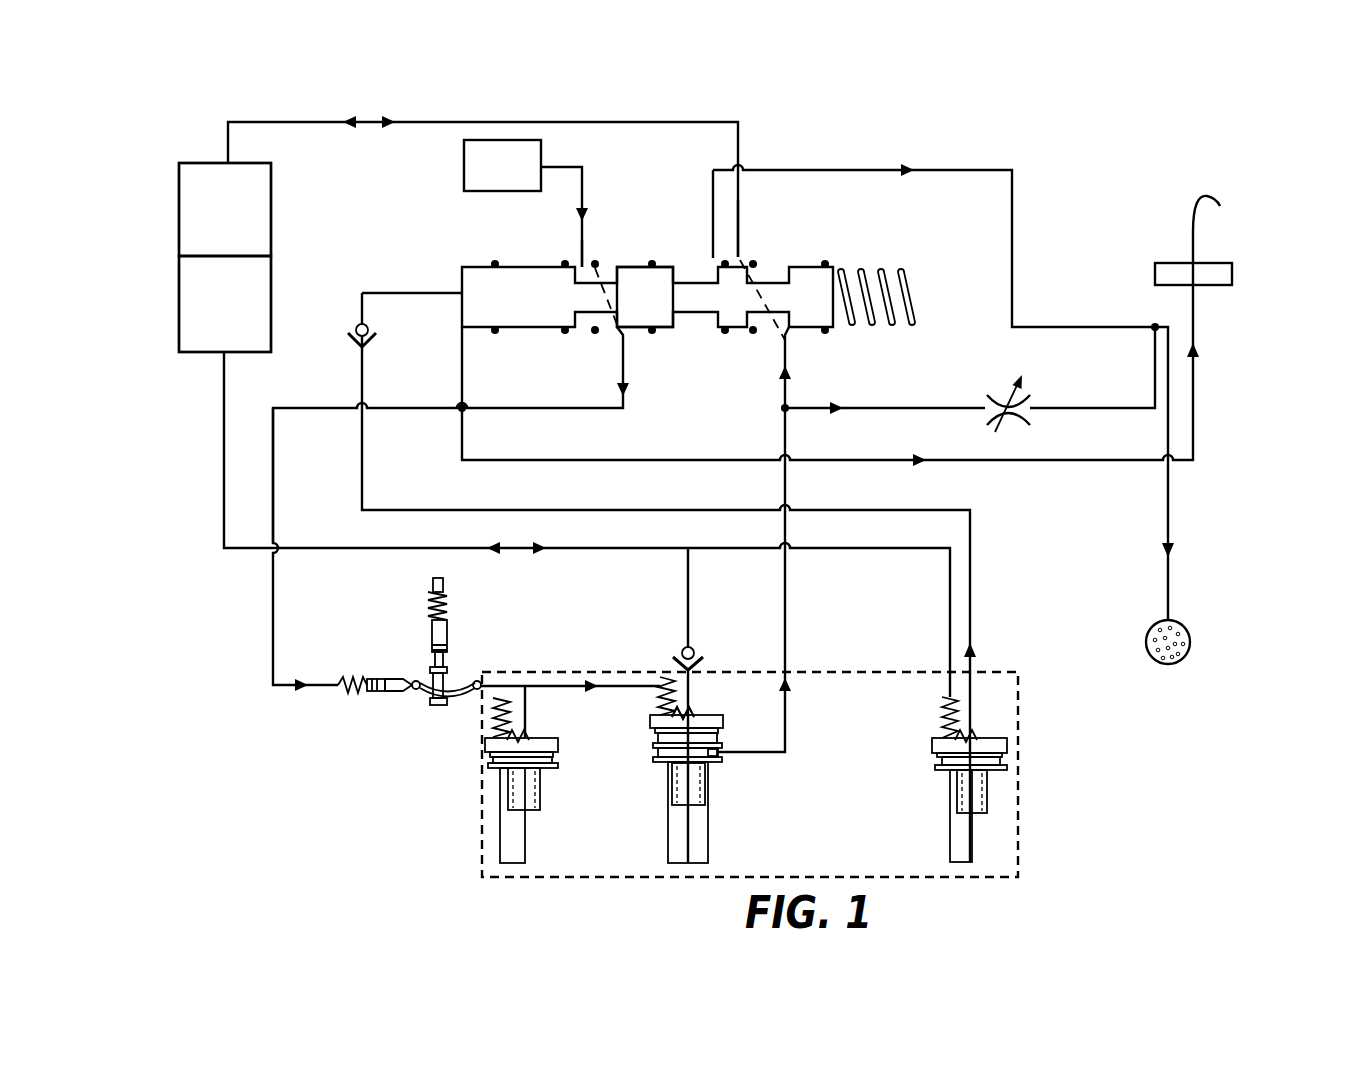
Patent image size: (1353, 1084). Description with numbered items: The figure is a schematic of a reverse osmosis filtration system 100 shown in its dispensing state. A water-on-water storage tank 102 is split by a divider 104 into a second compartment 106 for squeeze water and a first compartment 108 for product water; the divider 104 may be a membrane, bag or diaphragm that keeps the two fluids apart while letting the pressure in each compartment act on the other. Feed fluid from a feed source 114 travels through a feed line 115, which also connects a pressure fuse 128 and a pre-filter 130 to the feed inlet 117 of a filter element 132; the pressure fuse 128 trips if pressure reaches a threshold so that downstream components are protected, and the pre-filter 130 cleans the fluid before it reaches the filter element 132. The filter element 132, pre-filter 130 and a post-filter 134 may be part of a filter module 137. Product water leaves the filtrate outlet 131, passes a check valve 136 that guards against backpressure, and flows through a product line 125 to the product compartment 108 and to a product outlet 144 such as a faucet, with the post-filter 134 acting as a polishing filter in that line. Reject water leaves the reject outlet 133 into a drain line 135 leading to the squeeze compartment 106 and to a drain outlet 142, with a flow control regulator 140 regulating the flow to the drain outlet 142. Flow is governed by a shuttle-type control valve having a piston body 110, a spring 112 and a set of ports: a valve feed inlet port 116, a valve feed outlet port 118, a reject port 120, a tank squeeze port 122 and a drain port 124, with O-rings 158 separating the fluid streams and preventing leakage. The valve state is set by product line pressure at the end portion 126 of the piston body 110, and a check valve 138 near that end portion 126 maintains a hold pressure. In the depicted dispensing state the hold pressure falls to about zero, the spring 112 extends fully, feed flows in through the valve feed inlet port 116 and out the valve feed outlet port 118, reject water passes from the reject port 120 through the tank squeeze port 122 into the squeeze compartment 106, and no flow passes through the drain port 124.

The filtration system 100 is at (1009, 110).
The water-on-water storage tank 102 is at (530, 406).
The divider 104 is at (256, 236).
The second compartment 106 is at (225, 209).
The first compartment 108 is at (225, 304).
The piston body 110 is at (640, 268).
The spring 112 is at (884, 265).
The feed source 114 is at (526, 203).
The feed line 115 is at (235, 516).
The valve feed inlet port 116 is at (546, 240).
The feed inlet 117 is at (625, 716).
The valve feed outlet port 118 is at (451, 509).
The reject port 120 is at (932, 537).
The tank squeeze port 122 is at (767, 228).
The drain port 124 is at (688, 214).
The product line 125 is at (866, 331).
The end portion 126 is at (412, 269).
The pressure fuse 128 is at (499, 664).
The pre-filter 130 is at (486, 774).
The filtrate outlet 131 is at (712, 670).
The filter element 132 is at (724, 705).
The reject outlet 133 is at (740, 727).
The post-filter 134 is at (1005, 779).
The drain line 135 is at (943, 392).
The check valve 136 is at (658, 634).
The filter module 137 is at (711, 774).
The check valve 138 is at (629, 577).
The flow control regulator 140 is at (974, 395).
The drain outlet 142 is at (1203, 625).
The product outlet 144 is at (1227, 258).
The O-rings 158 is at (687, 327).